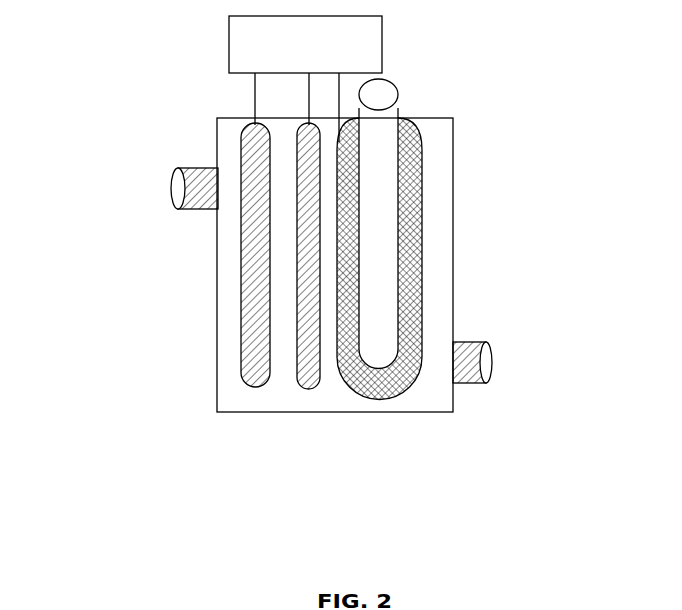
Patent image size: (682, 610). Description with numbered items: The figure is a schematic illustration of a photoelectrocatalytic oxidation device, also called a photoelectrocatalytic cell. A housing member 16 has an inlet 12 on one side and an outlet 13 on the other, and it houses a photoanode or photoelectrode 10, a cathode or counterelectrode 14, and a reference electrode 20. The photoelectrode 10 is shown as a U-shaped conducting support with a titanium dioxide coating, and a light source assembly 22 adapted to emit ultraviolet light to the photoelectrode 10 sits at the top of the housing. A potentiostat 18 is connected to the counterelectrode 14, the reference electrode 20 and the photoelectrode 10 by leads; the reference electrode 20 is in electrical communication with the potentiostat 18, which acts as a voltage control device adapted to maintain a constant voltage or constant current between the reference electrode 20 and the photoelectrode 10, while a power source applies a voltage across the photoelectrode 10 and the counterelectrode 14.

The photoanode 10 is at (428, 227).
The inlet 12 is at (530, 358).
The outlet 13 is at (160, 185).
The counterelectrode 14 is at (237, 288).
The housing member 16 is at (217, 402).
The potentiostat 18 is at (305, 79).
The reference electrode 20 is at (317, 395).
The light source assembly 22 is at (397, 98).